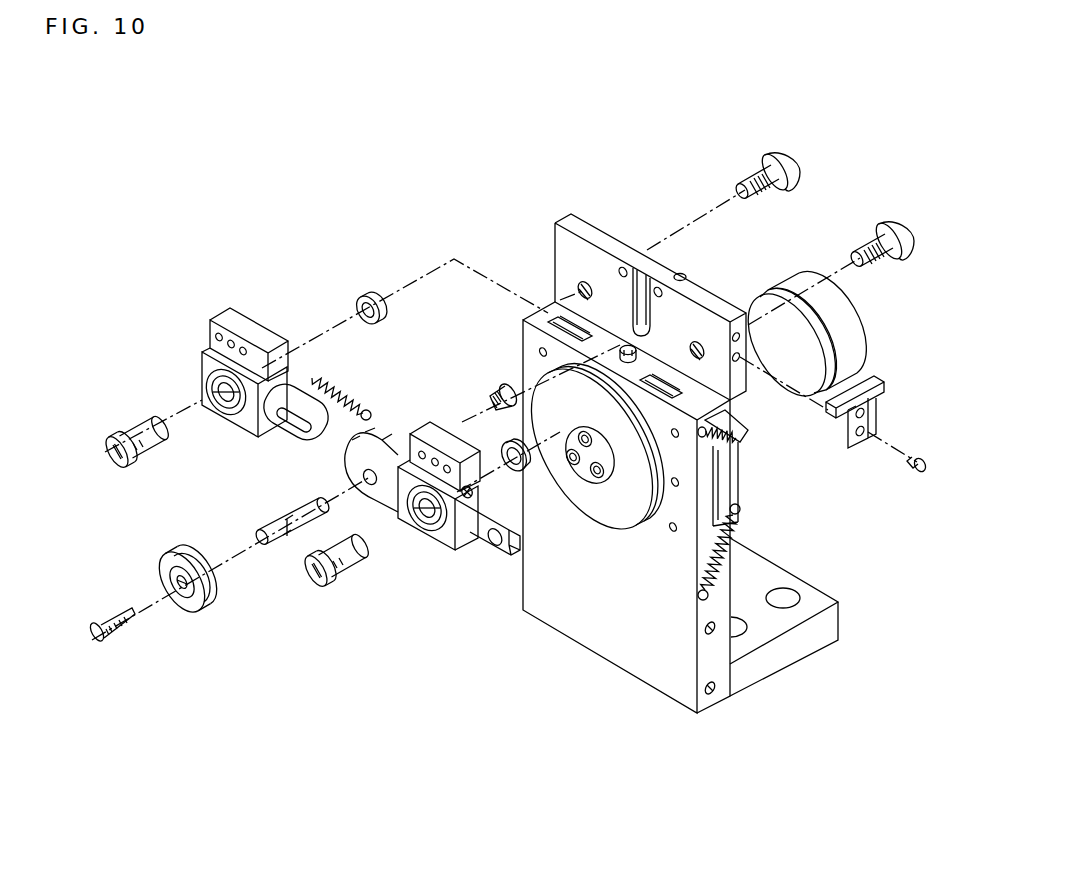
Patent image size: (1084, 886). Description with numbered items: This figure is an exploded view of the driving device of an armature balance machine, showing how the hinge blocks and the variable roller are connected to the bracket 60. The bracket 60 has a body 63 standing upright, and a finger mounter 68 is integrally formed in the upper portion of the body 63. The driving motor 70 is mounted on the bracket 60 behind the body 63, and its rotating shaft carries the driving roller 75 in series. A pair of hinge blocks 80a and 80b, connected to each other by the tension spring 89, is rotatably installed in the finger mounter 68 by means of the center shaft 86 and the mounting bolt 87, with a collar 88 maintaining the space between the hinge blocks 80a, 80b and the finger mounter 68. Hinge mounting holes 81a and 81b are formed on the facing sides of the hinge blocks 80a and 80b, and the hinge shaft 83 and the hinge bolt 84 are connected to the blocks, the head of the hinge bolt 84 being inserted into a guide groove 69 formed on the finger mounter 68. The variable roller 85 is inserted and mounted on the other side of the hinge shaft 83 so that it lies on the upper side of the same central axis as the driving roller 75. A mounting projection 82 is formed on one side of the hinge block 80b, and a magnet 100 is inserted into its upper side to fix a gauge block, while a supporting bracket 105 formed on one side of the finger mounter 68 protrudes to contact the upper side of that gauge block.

The bracket 60 is at (568, 652).
The body 63 is at (642, 657).
The finger mounter 68 is at (556, 236).
The guide groove 69 is at (643, 268).
The driving motor 70 is at (847, 330).
The driving roller 75 is at (593, 513).
The hinge block 80a is at (205, 352).
The hinge block 80b is at (437, 545).
The hinge mounting hole 81a is at (290, 437).
The hinge mounting hole 81b is at (365, 477).
The mounting projection 82 is at (488, 540).
The hinge shaft 83 is at (275, 548).
The hinge bolt 84 is at (503, 390).
The variable roller 85 is at (192, 618).
The center shaft 86 is at (135, 430).
The mounting bolt 87 is at (786, 162).
The collar 88 is at (362, 296).
The tension spring 89 is at (343, 388).
The magnet 100 is at (478, 492).
The supporting bracket 105 is at (873, 398).